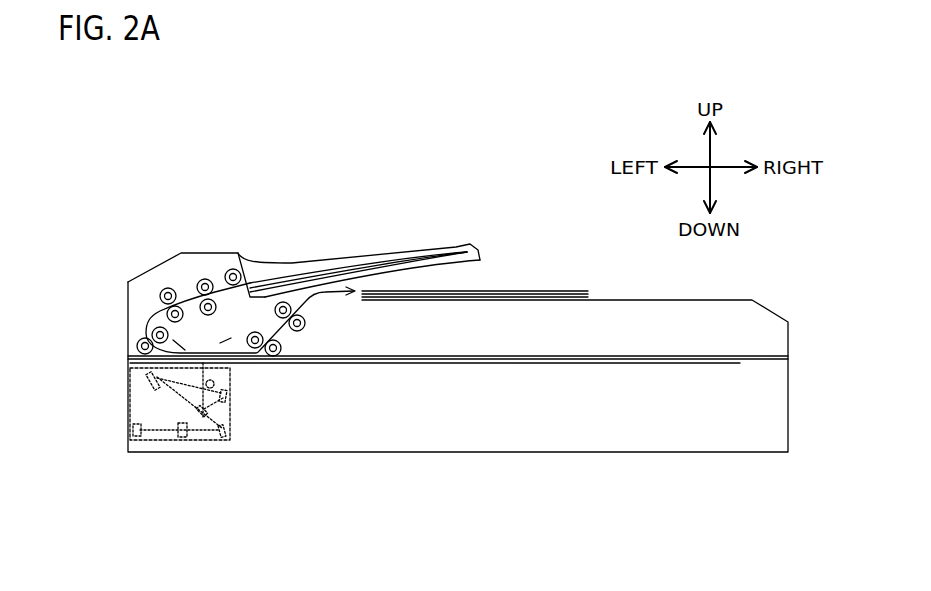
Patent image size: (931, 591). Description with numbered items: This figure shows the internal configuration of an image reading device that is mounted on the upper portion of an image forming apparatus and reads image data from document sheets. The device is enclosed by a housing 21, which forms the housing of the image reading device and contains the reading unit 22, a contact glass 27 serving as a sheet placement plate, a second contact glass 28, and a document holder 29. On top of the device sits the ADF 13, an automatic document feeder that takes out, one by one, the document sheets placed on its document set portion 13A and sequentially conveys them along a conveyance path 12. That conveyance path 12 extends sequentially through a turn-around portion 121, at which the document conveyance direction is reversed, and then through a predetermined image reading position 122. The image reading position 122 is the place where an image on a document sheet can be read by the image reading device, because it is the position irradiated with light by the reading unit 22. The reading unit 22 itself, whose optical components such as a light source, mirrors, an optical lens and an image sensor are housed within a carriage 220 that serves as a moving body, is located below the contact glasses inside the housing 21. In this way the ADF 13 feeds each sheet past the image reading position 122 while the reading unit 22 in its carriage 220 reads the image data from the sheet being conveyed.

The conveyance path 12 is at (185, 278).
The ADF 13 is at (128, 296).
The document set portion 13A is at (311, 262).
The turn-around portion 121 is at (148, 328).
The image reading position 122 is at (208, 342).
The carriage 220 is at (130, 397).
The reading unit 22 is at (242, 437).
The contact glass 28 is at (216, 366).
The contact glass 27 is at (407, 366).
The document holder 29 is at (603, 300).
The housing 21 is at (789, 402).